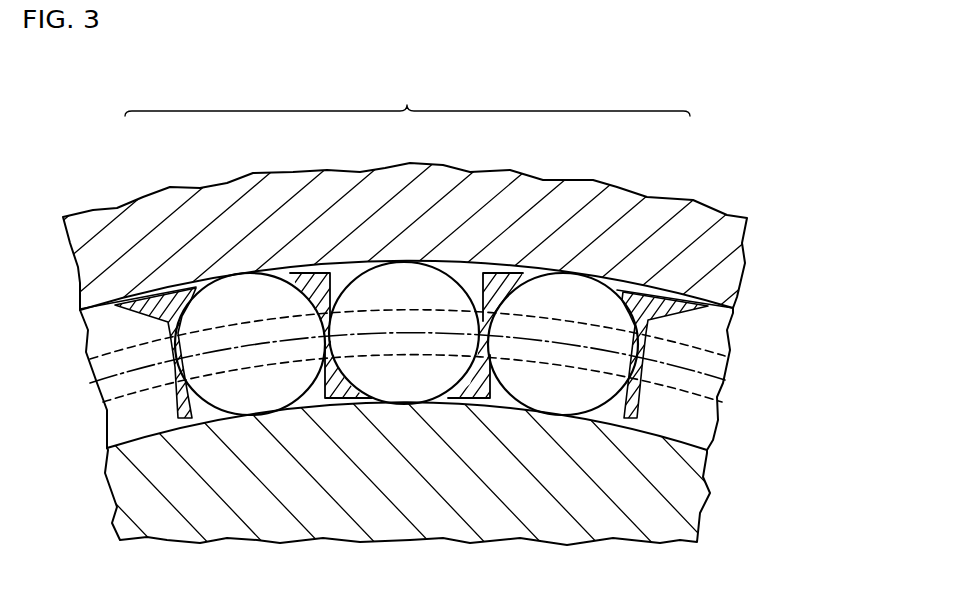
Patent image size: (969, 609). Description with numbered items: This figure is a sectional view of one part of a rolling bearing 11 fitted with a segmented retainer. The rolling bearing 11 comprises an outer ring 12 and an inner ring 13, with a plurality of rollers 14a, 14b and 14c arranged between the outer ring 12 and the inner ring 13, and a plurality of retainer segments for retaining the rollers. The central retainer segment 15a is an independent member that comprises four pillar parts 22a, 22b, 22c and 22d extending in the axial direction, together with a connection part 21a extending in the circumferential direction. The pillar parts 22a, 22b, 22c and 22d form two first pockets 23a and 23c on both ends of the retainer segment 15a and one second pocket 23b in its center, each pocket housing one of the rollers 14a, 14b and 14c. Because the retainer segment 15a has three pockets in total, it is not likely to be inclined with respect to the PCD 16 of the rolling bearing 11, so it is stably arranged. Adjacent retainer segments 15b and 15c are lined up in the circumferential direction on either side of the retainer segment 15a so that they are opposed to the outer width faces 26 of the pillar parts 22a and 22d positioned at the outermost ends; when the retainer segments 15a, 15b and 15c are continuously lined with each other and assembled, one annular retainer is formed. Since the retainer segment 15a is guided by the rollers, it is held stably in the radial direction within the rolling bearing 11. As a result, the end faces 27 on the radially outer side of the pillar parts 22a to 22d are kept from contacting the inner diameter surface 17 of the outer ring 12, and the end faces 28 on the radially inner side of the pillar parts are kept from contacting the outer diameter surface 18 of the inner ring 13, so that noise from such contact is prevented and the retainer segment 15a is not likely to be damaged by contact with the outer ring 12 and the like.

The rolling bearing 11 is at (755, 79).
The outer ring 12 is at (727, 268).
The inner ring 13 is at (677, 496).
The roller 14a is at (241, 301).
The roller 14b is at (402, 278).
The roller 14c is at (573, 302).
The retainer segment 15a is at (407, 99).
The retainer segment 15b is at (145, 308).
The retainer segment 15c is at (672, 303).
The PCD 16 is at (97, 385).
The inner diameter surface 17 is at (703, 300).
The outer diameter surface 18 is at (647, 430).
The connection part 21a is at (407, 353).
The pillar part 22a is at (170, 310).
The pillar part 22b is at (328, 271).
The pillar part 22c is at (485, 273).
The pillar part 22d is at (642, 308).
The first pocket 23a is at (258, 387).
The second pocket 23b is at (388, 377).
The first pocket 23c is at (557, 387).
The outer width face 26 is at (673, 410).
The end face 27 is at (630, 290).
The end face 28 is at (625, 423).